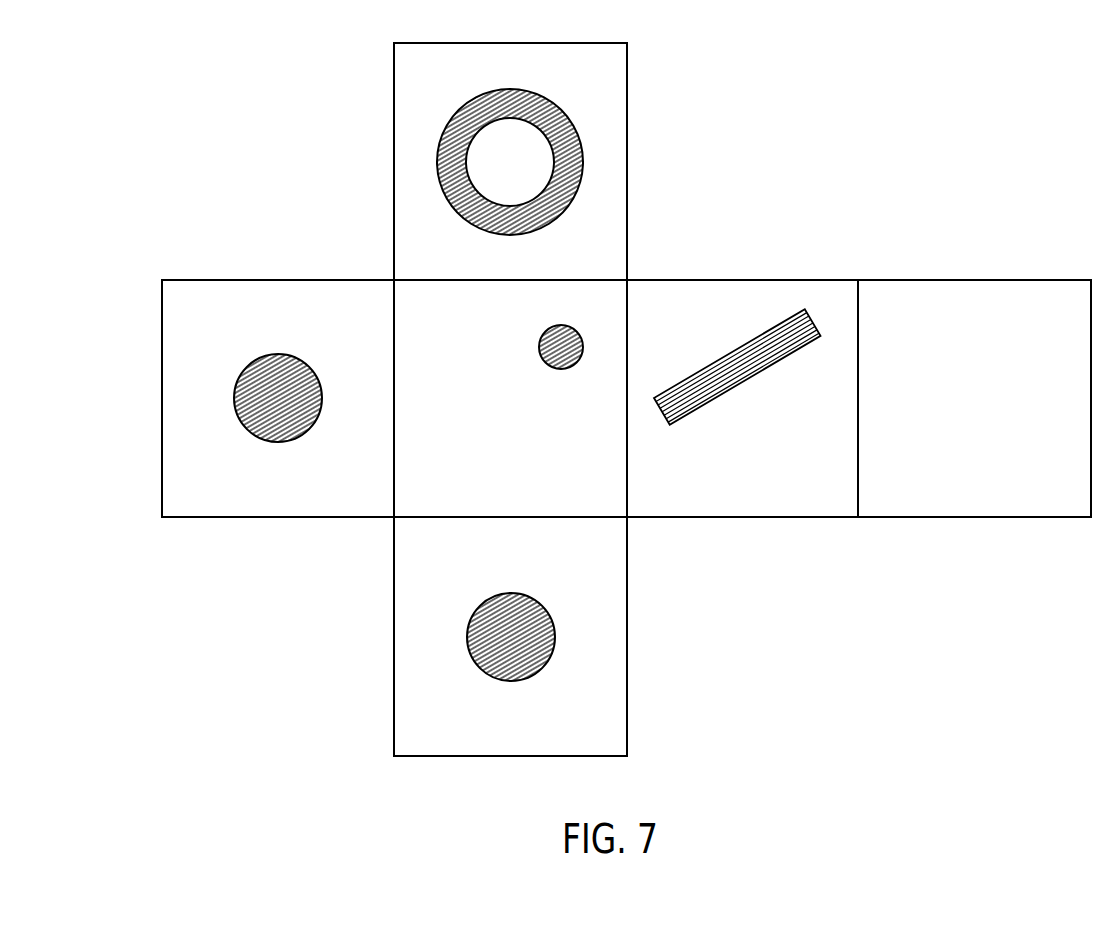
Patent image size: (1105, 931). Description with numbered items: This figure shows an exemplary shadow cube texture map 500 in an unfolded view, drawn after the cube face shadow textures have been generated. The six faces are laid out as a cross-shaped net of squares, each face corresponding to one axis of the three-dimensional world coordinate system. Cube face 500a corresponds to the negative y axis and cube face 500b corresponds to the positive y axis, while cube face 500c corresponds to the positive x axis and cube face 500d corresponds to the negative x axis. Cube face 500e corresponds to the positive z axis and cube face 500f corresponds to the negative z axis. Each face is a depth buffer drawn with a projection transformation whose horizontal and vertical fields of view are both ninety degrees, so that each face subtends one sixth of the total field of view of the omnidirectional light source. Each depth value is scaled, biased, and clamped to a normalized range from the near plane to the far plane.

The shadow cube texture map 500 is at (955, 84).
The cube face 500a is at (425, 637).
The cube face 500b is at (600, 120).
The cube face 500c is at (727, 307).
The cube face 500d is at (252, 493).
The cube face 500e is at (959, 487).
The cube face 500f is at (596, 483).